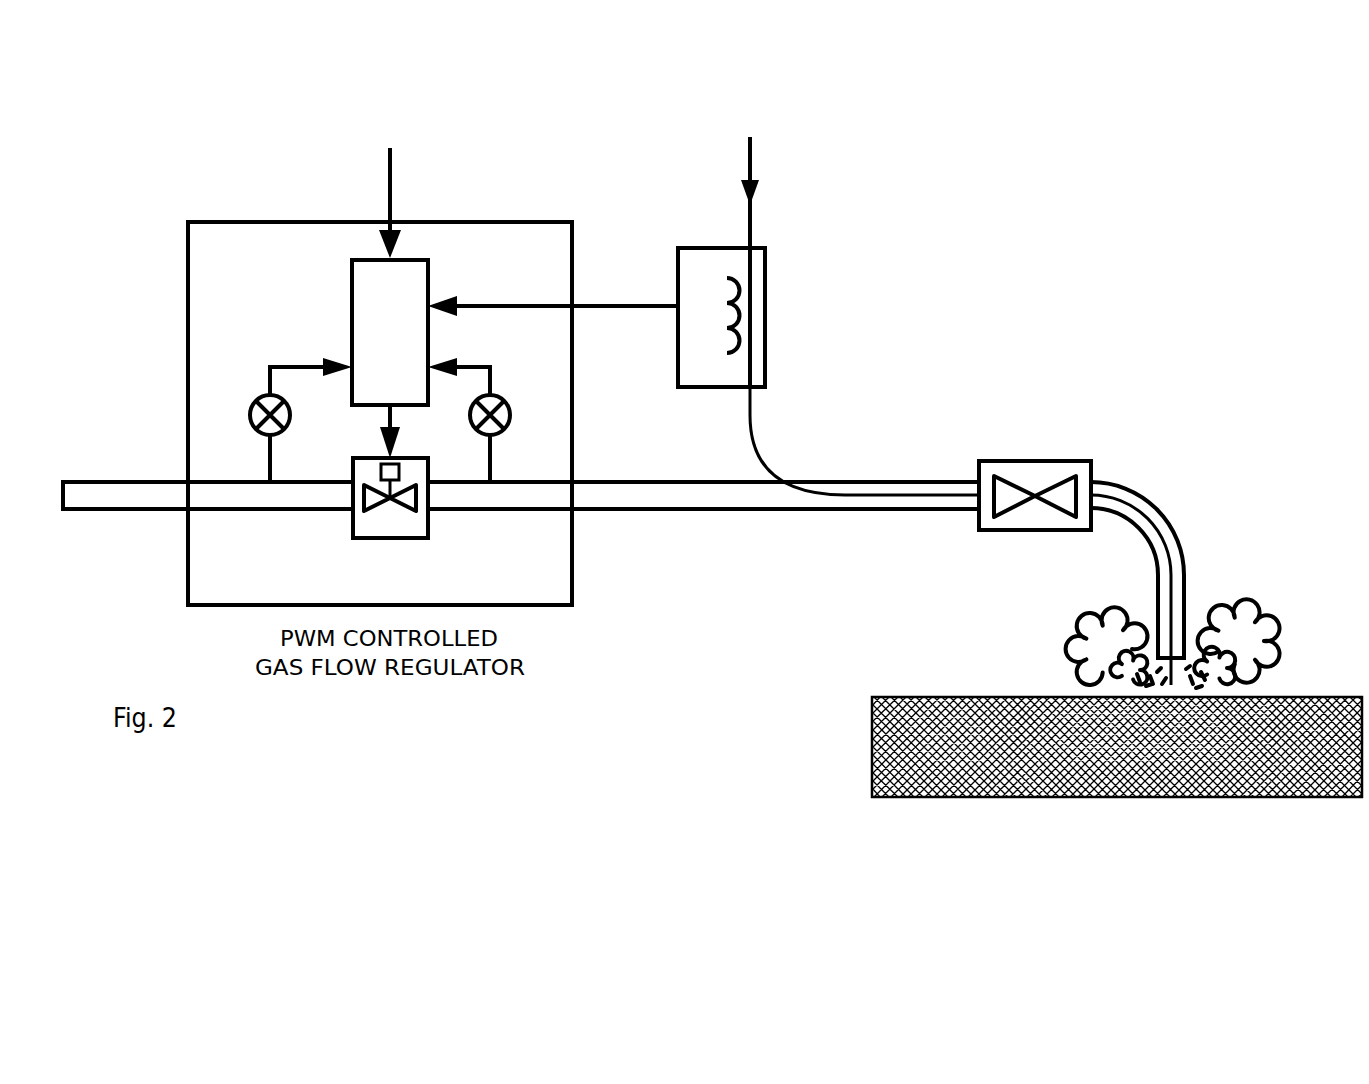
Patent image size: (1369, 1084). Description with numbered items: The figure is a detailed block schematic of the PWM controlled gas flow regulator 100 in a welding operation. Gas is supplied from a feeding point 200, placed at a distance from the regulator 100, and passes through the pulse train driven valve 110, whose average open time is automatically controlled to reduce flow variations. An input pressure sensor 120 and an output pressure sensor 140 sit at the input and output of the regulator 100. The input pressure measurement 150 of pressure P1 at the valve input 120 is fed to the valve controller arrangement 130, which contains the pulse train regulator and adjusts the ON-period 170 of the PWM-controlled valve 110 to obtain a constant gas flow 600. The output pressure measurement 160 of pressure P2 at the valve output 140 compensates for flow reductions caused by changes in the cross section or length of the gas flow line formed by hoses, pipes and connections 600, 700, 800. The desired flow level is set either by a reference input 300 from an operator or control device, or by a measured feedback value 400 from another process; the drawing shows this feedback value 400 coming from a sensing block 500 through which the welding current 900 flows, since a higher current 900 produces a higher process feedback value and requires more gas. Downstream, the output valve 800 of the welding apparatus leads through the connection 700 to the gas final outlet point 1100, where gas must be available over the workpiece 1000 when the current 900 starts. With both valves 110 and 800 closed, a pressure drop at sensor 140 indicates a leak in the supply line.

The PWM controlled gas flow regulator 100 is at (380, 413).
The pulse train driven valve 110 is at (390, 510).
The input pressure sensor 120 is at (250, 438).
The valve controller arrangement 130 is at (390, 332).
The output pressure sensor 140 is at (512, 434).
The input pressure measurement 150 is at (311, 366).
The output pressure measurement 160 is at (459, 366).
The ON-period 170 is at (371, 431).
The feeding point 200 is at (208, 516).
The reference input 300 is at (364, 197).
The measured feedback value 400 is at (553, 295).
The current sensor 500 is at (719, 330).
The gas flow line 600 is at (703, 465).
The gas flow line connection 700 is at (1163, 583).
The output valve 800 is at (1035, 480).
The current 900 is at (741, 257).
The workpiece 1000 is at (1082, 747).
The gas final outlet point 1100 is at (1150, 643).